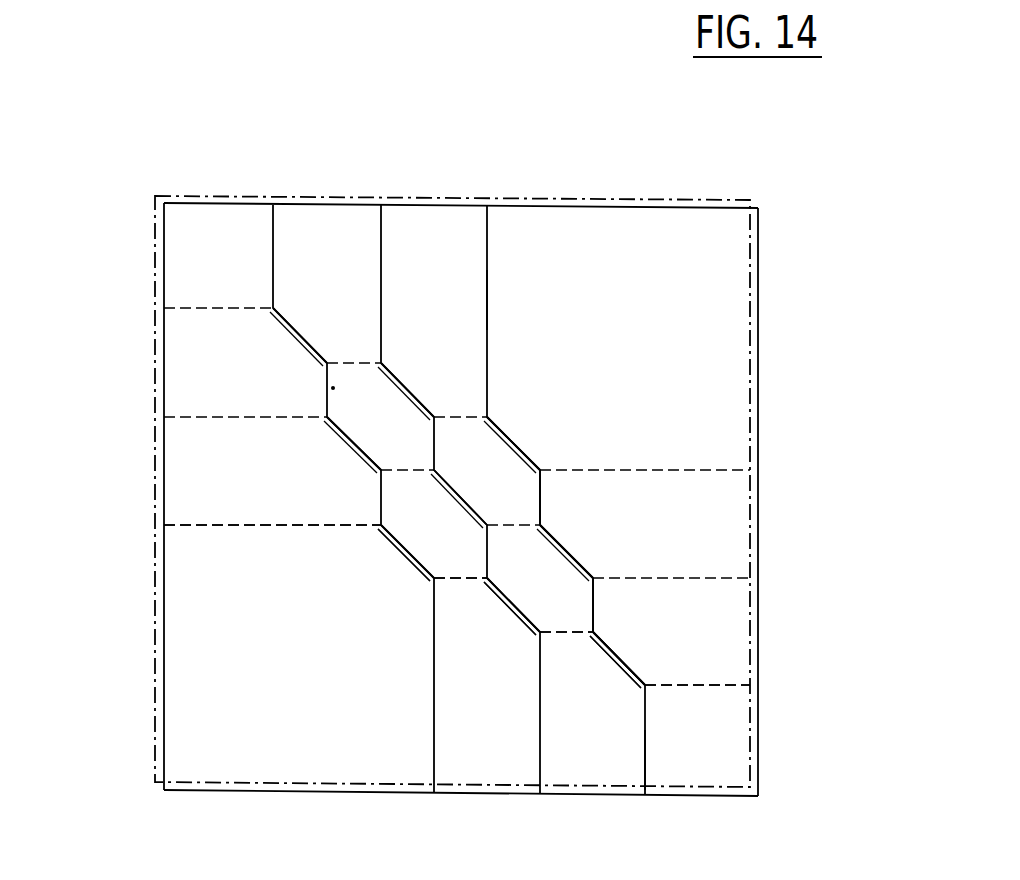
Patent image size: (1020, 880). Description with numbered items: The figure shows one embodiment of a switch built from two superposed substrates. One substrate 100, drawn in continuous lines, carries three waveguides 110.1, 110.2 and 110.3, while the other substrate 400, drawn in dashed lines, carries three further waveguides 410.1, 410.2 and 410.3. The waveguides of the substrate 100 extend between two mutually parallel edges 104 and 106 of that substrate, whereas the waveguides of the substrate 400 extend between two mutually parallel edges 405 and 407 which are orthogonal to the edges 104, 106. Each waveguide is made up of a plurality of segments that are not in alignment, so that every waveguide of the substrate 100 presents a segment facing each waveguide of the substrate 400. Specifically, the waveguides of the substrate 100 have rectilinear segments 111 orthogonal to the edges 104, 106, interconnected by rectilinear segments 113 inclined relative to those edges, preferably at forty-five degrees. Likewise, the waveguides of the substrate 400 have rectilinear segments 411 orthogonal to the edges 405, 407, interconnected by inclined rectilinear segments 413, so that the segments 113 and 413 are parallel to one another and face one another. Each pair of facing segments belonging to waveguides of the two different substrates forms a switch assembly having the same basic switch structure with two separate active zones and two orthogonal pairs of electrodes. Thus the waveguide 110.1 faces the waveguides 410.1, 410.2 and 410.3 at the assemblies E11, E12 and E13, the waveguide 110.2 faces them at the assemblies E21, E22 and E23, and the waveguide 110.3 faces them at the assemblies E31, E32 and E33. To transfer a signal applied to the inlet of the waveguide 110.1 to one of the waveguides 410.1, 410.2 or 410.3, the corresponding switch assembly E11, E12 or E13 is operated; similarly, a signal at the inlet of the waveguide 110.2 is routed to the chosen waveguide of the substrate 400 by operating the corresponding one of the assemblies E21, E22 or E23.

The substrate 100 is at (462, 504).
The edge of the substrate 104 is at (650, 204).
The edge of the substrate 106 is at (606, 797).
The edge of the substrate 405 is at (153, 577).
The edge of the substrate 407 is at (756, 540).
The substrate 400 is at (153, 647).
The waveguide 110.1 is at (269, 238).
The waveguide 110.2 is at (377, 245).
The waveguide 110.3 is at (482, 252).
The waveguide 410.1 is at (200, 306).
The waveguide 410.2 is at (207, 415).
The waveguide 410.3 is at (205, 521).
The rectilinear segment 111 is at (488, 296).
The rectilinear segment 113 is at (528, 452).
The rectilinear segment 411 is at (246, 534).
The rectilinear segment 413 is at (398, 566).
The switch assembly E11 is at (313, 334).
The switch assembly E12 is at (366, 455).
The switch assembly E13 is at (428, 554).
The switch assembly E21 is at (424, 398).
The switch assembly E22 is at (482, 503).
The switch assembly E23 is at (513, 592).
The switch assembly E31 is at (507, 425).
The switch assembly E32 is at (590, 563).
The switch assembly E33 is at (628, 686).